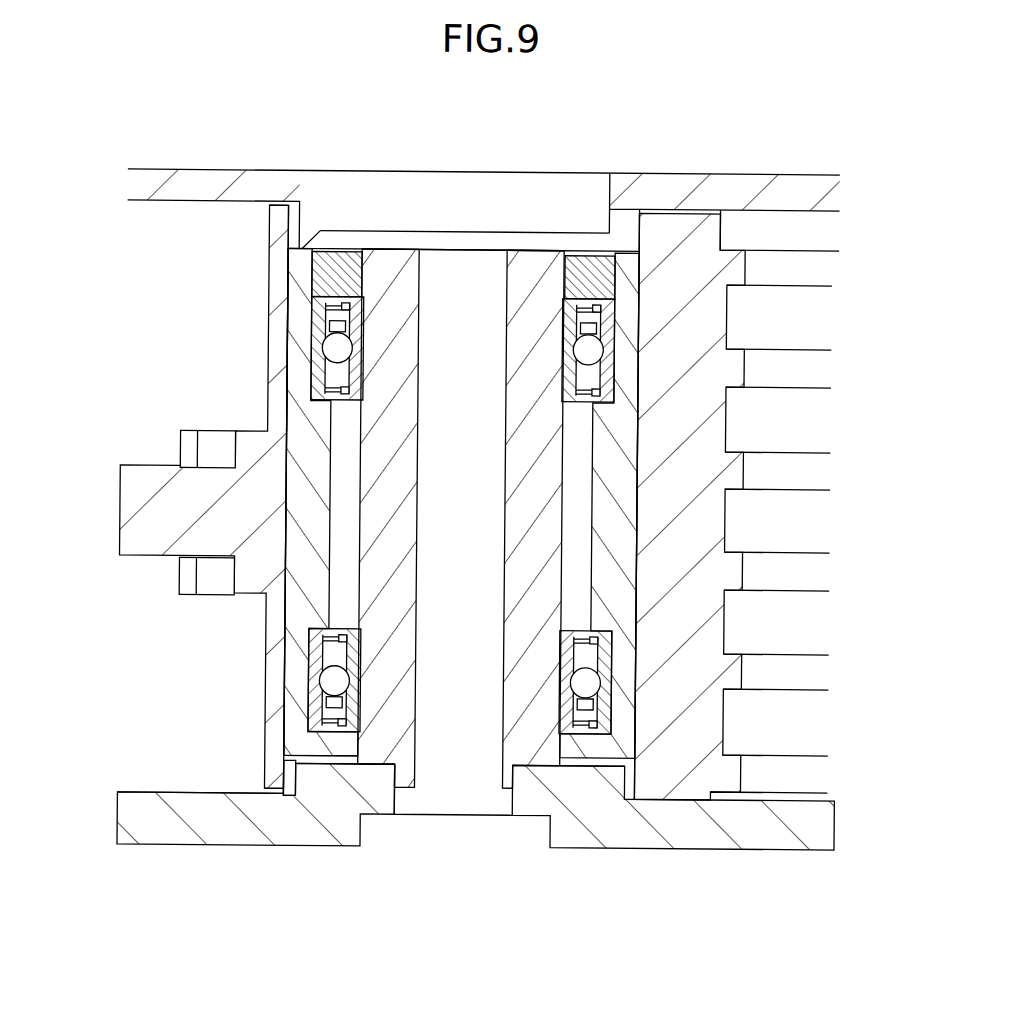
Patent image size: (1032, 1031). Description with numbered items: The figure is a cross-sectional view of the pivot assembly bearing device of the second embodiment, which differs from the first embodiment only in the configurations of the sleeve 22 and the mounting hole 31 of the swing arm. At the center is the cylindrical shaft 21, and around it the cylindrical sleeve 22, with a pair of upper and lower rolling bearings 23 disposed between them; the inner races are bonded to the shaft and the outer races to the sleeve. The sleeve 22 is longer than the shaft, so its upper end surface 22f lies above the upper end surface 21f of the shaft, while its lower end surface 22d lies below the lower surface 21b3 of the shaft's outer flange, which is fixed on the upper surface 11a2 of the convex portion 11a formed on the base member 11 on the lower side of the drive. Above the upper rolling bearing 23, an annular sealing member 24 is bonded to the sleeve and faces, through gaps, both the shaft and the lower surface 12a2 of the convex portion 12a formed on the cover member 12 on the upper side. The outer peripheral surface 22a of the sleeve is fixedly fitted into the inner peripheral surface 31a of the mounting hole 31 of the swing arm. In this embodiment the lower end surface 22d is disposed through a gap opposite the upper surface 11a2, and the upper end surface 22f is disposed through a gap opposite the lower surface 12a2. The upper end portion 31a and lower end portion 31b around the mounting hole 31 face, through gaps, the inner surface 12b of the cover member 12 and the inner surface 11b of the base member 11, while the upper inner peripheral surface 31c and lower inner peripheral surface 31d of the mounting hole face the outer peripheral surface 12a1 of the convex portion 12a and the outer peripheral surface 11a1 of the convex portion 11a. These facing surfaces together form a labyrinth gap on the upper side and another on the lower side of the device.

The base member 11 is at (778, 822).
The convex portion 11a is at (350, 800).
The outer peripheral surface of the convex portion 11a1 is at (290, 770).
The upper surface of the convex portion 11a2 is at (325, 752).
The inner surface of the base member 11b is at (178, 795).
The cover member 12 is at (803, 180).
The convex portion 12a is at (397, 245).
The outer peripheral surface of the convex portion 12a1 is at (647, 208).
The lower surface of the convex portion 12a2 is at (336, 250).
The inner surface of the cover member 12b is at (732, 208).
The shaft 21 is at (528, 564).
The upper end surface of the shaft 21f is at (532, 252).
The lower surface of the outer flange 21b3 is at (572, 767).
The sleeve 22 is at (300, 425).
The outer peripheral surface of the sleeve 22a is at (290, 400).
The lower end surface of the sleeve 22d is at (337, 790).
The upper end surface of the sleeve 22f is at (308, 255).
The rolling bearing 23 is at (627, 349).
The sealing member 24 is at (312, 290).
The mounting hole 31 is at (278, 327).
The upper end portion around the mounting hole 31a is at (278, 205).
The lower end portion around the mounting hole 31b is at (273, 790).
The upper inner peripheral surface of the mounting hole 31c is at (298, 207).
The lower inner peripheral surface of the mounting hole 31d is at (283, 778).